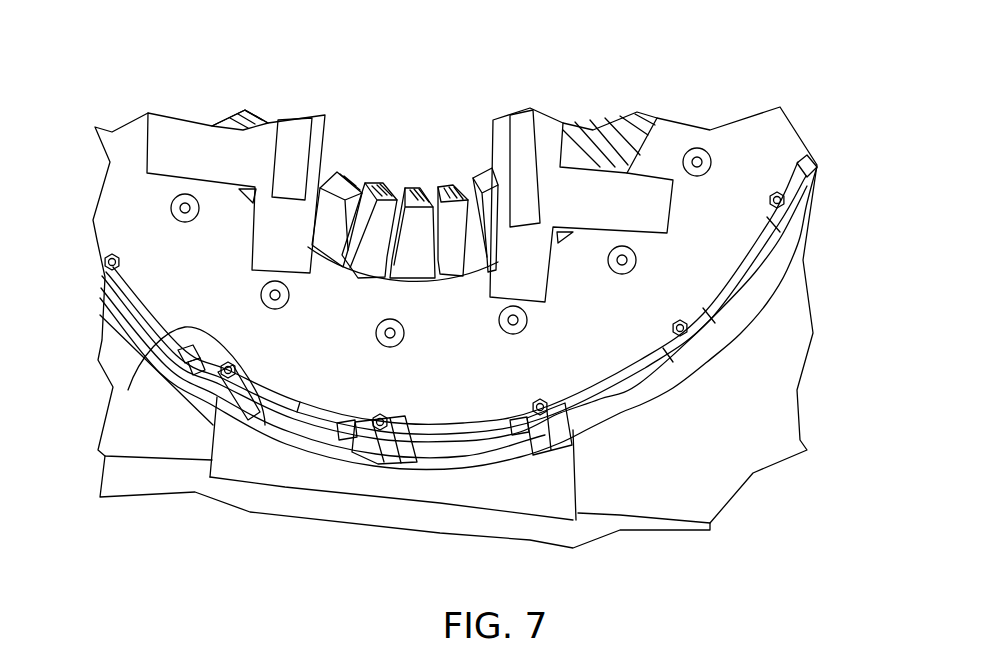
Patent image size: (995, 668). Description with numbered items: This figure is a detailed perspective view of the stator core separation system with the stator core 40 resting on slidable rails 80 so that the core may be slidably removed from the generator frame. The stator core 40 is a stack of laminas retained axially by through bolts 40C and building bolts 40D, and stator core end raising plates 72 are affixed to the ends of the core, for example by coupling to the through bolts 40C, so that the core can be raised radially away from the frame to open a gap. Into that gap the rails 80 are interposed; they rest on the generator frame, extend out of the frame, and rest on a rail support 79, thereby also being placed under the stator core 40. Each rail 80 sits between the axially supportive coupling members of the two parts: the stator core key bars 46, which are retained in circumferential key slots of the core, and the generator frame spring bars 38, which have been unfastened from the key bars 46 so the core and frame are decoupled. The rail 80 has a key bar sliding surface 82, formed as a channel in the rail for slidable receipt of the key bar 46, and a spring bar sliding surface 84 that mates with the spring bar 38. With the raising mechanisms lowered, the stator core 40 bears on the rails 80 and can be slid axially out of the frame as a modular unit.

The spring bar 38 is at (182, 358).
The stator core 40 is at (445, 176).
The through bolt 40C is at (185, 194).
The building bolt 40D is at (128, 392).
The key bar 46 is at (232, 405).
The stator core end raising plate 72 is at (753, 150).
The rail support 79 is at (335, 483).
The rail 80 is at (185, 372).
The key bar sliding surface 82 is at (222, 372).
The spring bar sliding surface 84 is at (248, 390).